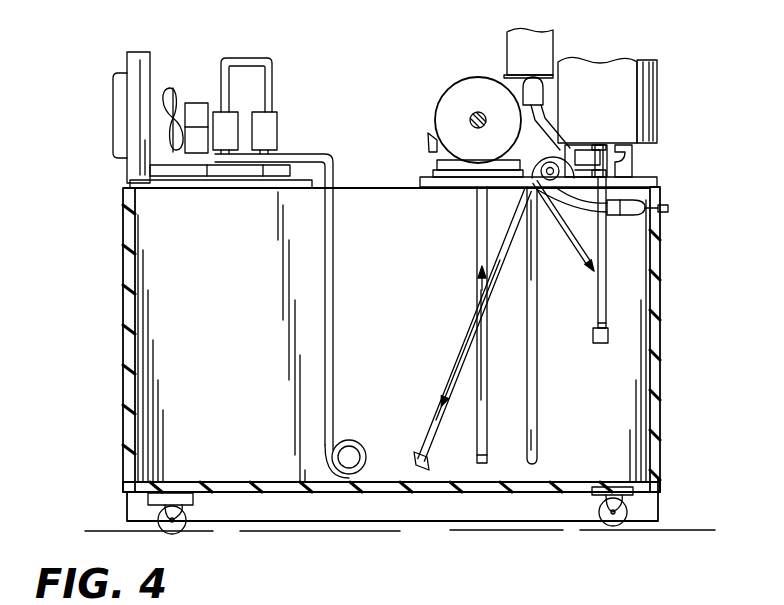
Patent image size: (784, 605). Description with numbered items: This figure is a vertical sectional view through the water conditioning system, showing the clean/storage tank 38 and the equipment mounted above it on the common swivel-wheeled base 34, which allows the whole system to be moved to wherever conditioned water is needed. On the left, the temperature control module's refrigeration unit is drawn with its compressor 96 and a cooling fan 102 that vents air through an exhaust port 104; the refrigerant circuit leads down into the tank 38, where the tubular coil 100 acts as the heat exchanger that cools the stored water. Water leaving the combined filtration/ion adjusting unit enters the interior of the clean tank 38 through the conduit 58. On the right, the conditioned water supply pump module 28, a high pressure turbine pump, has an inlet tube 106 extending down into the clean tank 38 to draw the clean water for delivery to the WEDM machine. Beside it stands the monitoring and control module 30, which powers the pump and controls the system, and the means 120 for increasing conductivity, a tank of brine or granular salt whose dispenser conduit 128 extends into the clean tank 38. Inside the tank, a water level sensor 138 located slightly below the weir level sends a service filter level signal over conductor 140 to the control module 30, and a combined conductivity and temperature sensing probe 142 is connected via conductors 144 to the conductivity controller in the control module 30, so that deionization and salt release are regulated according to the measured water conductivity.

The conditioned water supply pump module 28 is at (494, 107).
The monitoring and control module 30 is at (592, 84).
The swivel-wheeled base 34 is at (633, 498).
The clean/storage tank 38 is at (395, 300).
The conduit 58 is at (458, 360).
The compressor 96 is at (250, 60).
The tubular coil 100 is at (344, 442).
The cooling fan 102 is at (208, 103).
The exhaust port 104 is at (113, 115).
The inlet tube 106 is at (476, 257).
The means for increasing conductivity 120 is at (507, 44).
The dispenser conduit 128 is at (572, 236).
The water level sensor 138 is at (626, 349).
The conductor 140 is at (607, 264).
The conductivity and temperature sensing probe 142 is at (539, 357).
The conductors 144 is at (537, 148).